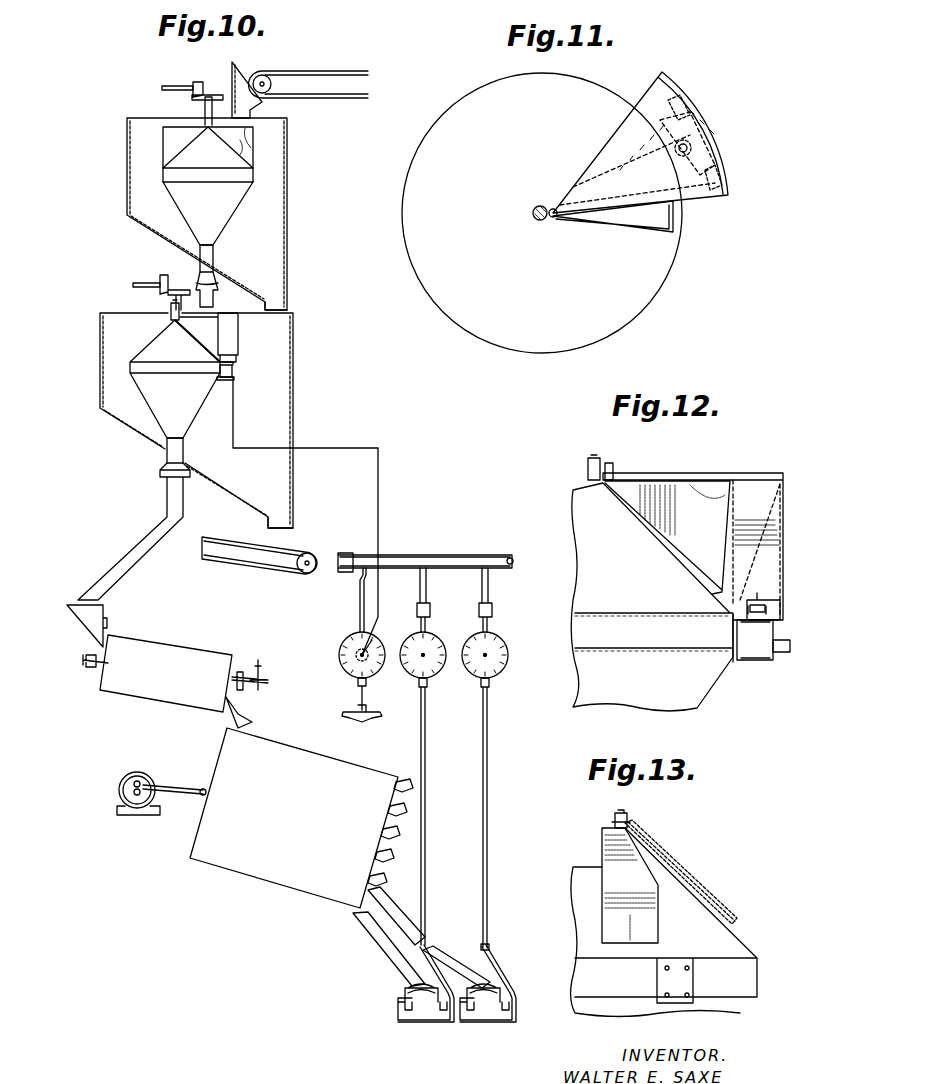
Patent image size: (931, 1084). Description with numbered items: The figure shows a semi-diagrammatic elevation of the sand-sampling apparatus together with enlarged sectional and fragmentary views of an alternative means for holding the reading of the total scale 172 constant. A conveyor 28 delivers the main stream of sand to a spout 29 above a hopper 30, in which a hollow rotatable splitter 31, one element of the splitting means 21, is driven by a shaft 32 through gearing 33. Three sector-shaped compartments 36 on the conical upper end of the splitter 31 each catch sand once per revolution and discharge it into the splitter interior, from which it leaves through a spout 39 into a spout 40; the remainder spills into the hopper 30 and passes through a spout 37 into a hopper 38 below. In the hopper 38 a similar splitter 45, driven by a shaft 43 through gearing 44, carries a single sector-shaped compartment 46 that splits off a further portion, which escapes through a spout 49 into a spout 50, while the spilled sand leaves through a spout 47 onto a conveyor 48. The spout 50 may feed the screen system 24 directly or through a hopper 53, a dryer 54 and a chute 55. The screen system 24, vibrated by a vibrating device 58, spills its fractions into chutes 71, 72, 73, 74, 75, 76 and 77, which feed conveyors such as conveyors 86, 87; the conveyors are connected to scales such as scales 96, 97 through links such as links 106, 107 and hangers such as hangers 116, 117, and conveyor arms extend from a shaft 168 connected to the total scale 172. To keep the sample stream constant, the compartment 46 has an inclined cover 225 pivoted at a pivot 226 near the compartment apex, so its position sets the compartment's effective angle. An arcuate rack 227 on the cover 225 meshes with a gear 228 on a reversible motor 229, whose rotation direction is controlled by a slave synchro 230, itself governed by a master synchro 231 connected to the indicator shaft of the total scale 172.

In FIG. 10, the splitting means 21 is at (121, 254).
In FIG. 10, the screen system 24 is at (231, 880).
In FIG. 10, the conveyor 28 is at (324, 70).
In FIG. 10, the spout 29 is at (240, 68).
In FIG. 10, the hopper 30 is at (288, 212).
In FIG. 10, the splitter 31 is at (222, 208).
In FIG. 10, the shaft 32 is at (188, 86).
In FIG. 10, the gearing 33 is at (211, 87).
In FIG. 10, the sector-shaped compartments 36 is at (170, 143).
In FIG. 10, the spout 37 is at (281, 305).
In FIG. 10, the hopper 38 is at (294, 400).
In FIG. 10, the spout 39 is at (214, 258).
In FIG. 10, the spout 40 is at (220, 292).
In FIG. 10, the shaft 43 is at (155, 283).
In FIG. 10, the gearing 44 is at (175, 282).
In FIG. 10, the splitter 45 is at (150, 408).
In FIG. 11, the splitter 45 is at (624, 305).
In FIG. 12, the splitter 45 is at (700, 695).
In FIG. 13, the splitter 45 is at (740, 945).
In FIG. 10, the sector-shaped compartment 46 is at (238, 333).
In FIG. 11, the sector-shaped compartment 46 is at (621, 225).
In FIG. 12, the sector-shaped compartment 46 is at (676, 540).
In FIG. 13, the sector-shaped compartment 46 is at (600, 858).
In FIG. 10, the spout 47 is at (283, 522).
In FIG. 10, the conveyor 48 is at (210, 537).
In FIG. 10, the spout 49 is at (185, 452).
In FIG. 10, the spout 50 is at (133, 560).
In FIG. 10, the hopper 53 is at (105, 618).
In FIG. 10, the dryer 54 is at (168, 640).
In FIG. 10, the chute 55 is at (248, 718).
In FIG. 10, the vibrating device 58 is at (130, 776).
In FIG. 10, the chute 71 is at (412, 782).
In FIG. 10, the chute 72 is at (406, 806).
In FIG. 10, the chute 73 is at (399, 829).
In FIG. 10, the chute 74 is at (393, 852).
In FIG. 10, the chute 75 is at (386, 876).
In FIG. 10, the chute 76 is at (406, 913).
In FIG. 10, the chute 77 is at (372, 932).
In FIG. 10, the conveyor 86 is at (489, 1035).
In FIG. 10, the conveyor 87 is at (421, 1035).
In FIG. 10, the scale 96 is at (472, 671).
In FIG. 10, the scale 97 is at (410, 671).
In FIG. 10, the link 106 is at (482, 718).
In FIG. 10, the link 107 is at (427, 752).
In FIG. 10, the hanger 116 is at (482, 950).
In FIG. 10, the hanger 117 is at (418, 958).
In FIG. 10, the shaft 168 is at (402, 557).
In FIG. 10, the total scale 172 is at (340, 660).
In FIG. 10, the cover 225 is at (207, 335).
In FIG. 11, the cover 225 is at (607, 143).
In FIG. 12, the cover 225 is at (654, 472).
In FIG. 13, the cover 225 is at (678, 858).
In FIG. 10, the pivot 226 is at (172, 318).
In FIG. 11, the pivot 226 is at (553, 222).
In FIG. 12, the pivot 226 is at (612, 448).
In FIG. 13, the pivot 226 is at (616, 815).
In FIG. 11, the arcuate rack 227 is at (705, 178).
In FIG. 12, the arcuate rack 227 is at (776, 608).
In FIG. 11, the gear 228 is at (690, 150).
In FIG. 12, the gear 228 is at (762, 600).
In FIG. 10, the reversible motor 229 is at (224, 380).
In FIG. 11, the reversible motor 229 is at (690, 118).
In FIG. 12, the reversible motor 229 is at (765, 655).
In FIG. 10, the slave synchro 230 is at (234, 371).
In FIG. 12, the slave synchro 230 is at (788, 645).
In FIG. 10, the master synchro 231 is at (346, 640).